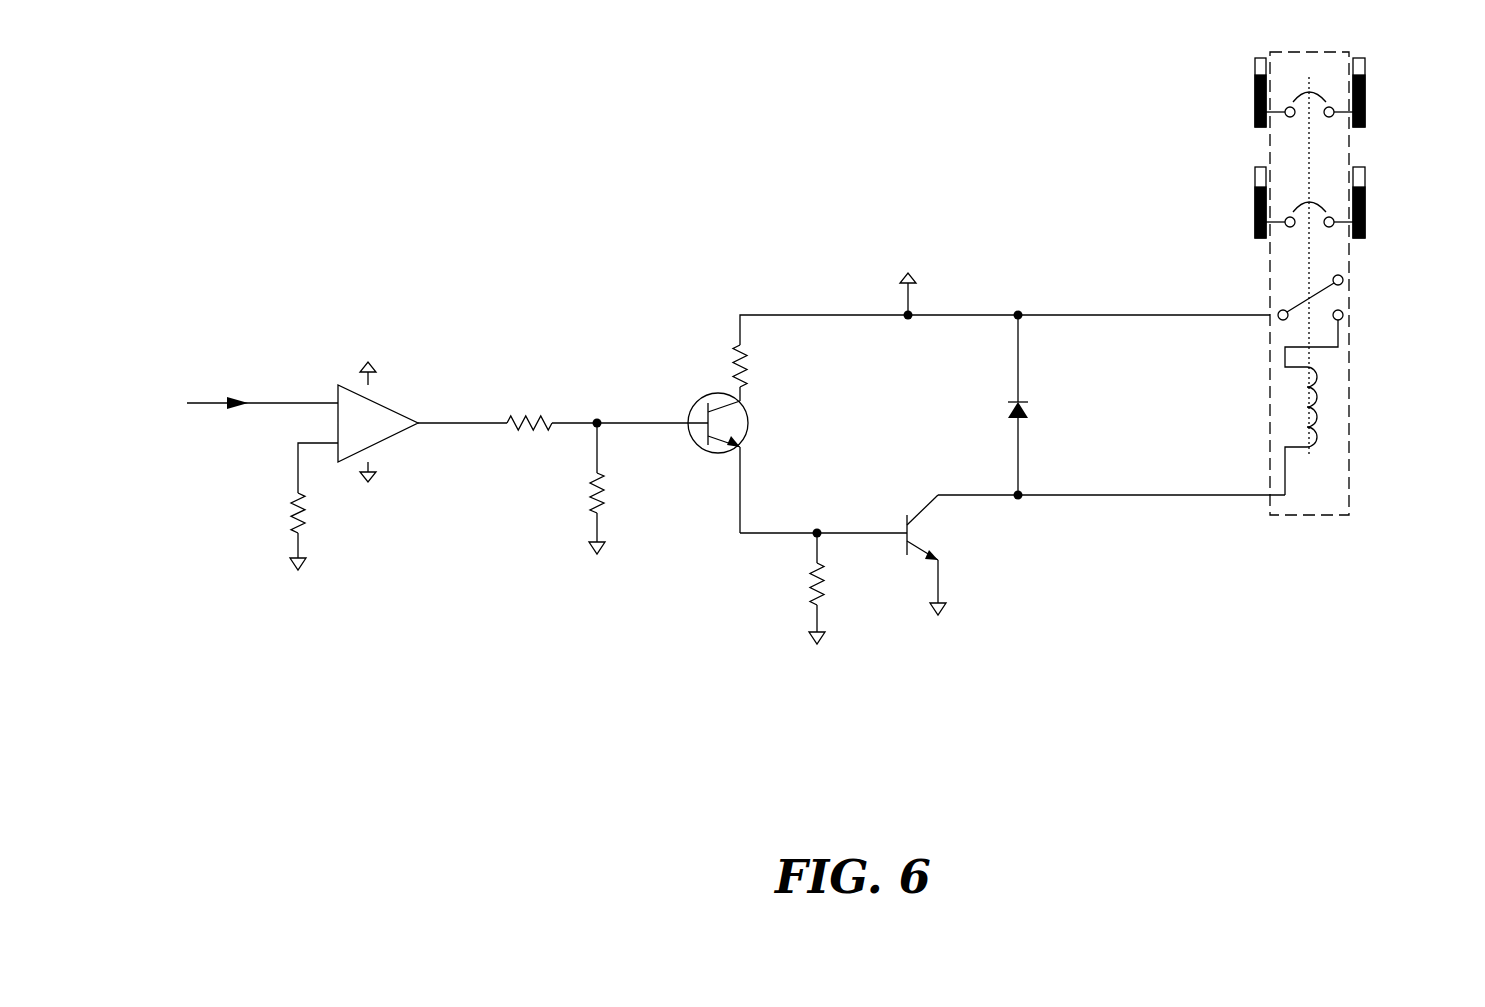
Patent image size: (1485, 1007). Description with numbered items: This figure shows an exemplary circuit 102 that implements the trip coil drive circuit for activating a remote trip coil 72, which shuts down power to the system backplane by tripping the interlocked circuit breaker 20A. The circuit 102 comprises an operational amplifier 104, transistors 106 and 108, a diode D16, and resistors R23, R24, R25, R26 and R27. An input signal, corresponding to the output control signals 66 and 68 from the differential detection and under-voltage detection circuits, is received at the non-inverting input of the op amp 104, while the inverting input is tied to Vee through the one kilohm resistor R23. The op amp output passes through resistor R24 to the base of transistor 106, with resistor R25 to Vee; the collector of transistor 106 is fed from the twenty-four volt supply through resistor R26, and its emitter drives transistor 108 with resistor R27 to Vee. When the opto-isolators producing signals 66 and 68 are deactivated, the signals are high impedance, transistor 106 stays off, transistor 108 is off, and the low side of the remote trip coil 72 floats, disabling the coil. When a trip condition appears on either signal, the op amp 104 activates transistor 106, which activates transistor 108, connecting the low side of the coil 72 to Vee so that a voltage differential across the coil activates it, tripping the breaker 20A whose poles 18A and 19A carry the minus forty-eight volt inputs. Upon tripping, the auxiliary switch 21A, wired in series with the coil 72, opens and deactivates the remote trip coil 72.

The circuit 102 is at (603, 708).
The output control signal 66 is at (235, 415).
The output control signal 68 is at (257, 405).
The operational amplifier 104 is at (377, 433).
The resistor R23 is at (288, 513).
The resistor R24 is at (530, 410).
The resistor R25 is at (608, 492).
The resistor R26 is at (750, 358).
The resistor R27 is at (807, 578).
The transistor 106 is at (740, 428).
The transistor 108 is at (918, 530).
The diode D16 is at (1023, 413).
The pole 18A is at (1367, 85).
The pole 19A is at (1367, 190).
The auxiliary switch 21A is at (1340, 298).
The interlocked circuit breaker 20A is at (1348, 333).
The remote trip coil 72 is at (1310, 407).